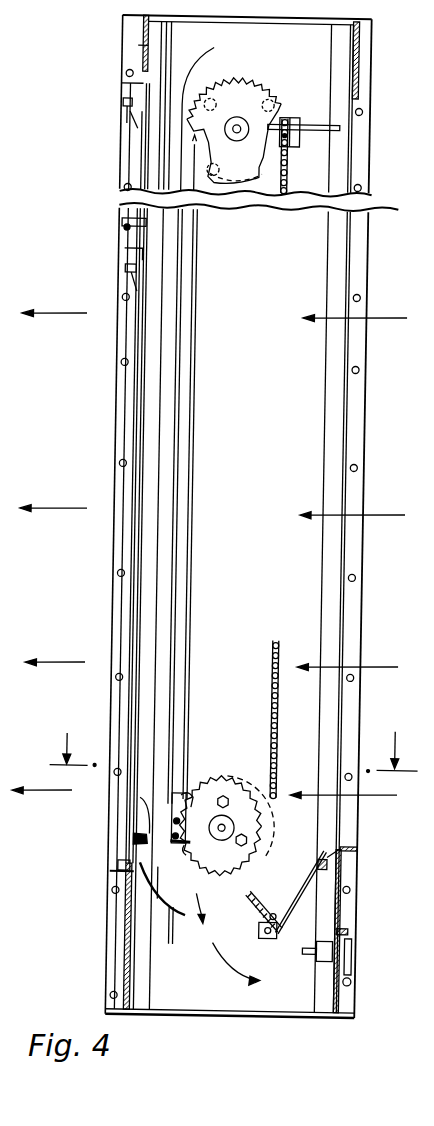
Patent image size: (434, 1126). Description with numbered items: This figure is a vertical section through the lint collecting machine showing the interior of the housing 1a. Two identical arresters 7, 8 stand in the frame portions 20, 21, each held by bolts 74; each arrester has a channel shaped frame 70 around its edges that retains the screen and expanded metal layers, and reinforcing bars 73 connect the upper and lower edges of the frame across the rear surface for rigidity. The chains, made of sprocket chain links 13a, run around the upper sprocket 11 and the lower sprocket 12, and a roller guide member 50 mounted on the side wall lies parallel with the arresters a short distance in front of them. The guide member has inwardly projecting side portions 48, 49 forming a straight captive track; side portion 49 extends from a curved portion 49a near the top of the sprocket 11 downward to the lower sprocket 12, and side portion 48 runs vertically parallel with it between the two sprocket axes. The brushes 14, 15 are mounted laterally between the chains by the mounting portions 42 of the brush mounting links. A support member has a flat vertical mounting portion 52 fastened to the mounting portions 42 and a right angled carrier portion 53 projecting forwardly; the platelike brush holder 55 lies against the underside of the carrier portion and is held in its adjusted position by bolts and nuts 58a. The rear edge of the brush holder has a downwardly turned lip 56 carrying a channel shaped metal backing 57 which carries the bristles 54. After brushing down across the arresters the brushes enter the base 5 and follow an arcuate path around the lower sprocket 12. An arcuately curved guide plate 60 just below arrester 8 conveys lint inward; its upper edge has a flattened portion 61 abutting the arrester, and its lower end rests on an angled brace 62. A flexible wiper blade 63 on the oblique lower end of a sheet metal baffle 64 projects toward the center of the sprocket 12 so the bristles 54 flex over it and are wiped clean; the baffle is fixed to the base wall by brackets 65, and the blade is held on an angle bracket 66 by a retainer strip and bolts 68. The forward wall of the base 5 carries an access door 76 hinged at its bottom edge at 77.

The housing 1a is at (363, 24).
The frame portion 20 is at (130, 47).
The bolts 74 is at (118, 104).
The arrester 7 is at (131, 162).
The frame portion 21 is at (121, 257).
The channel shaped frame 70 is at (128, 280).
The arrester 8 is at (136, 604).
The reinforcing bars 73 is at (132, 434).
The curved portion 49a is at (185, 71).
The side portion 49 is at (174, 358).
The side portion 48 is at (181, 408).
The roller guide member 50 is at (192, 481).
The sprocket 11 is at (245, 92).
The brush 14 is at (313, 116).
The sprocket chain links 13a is at (275, 654).
The lower sprocket 12 is at (243, 783).
The carrier portion 53 is at (187, 821).
The brush holder 55 is at (196, 842).
The mounting portion 52 is at (177, 801).
The mounting portions 42 is at (185, 801).
The nuts 58a is at (194, 848).
The bristles 54 is at (139, 839).
The brush 15 is at (145, 799).
The metal backing 57 is at (158, 837).
The flattened portion 61 is at (138, 870).
The lip 56 is at (162, 888).
The angled brace 62 is at (184, 938).
The guide plate 60 is at (164, 901).
The wiper blade 63 is at (254, 903).
The angle bracket 66 is at (265, 930).
The bolts 68 is at (279, 907).
The baffle 64 is at (309, 879).
The brackets 65 is at (338, 853).
The access door 76 is at (352, 928).
The hinge 77 is at (359, 980).
The base 5 is at (127, 932).